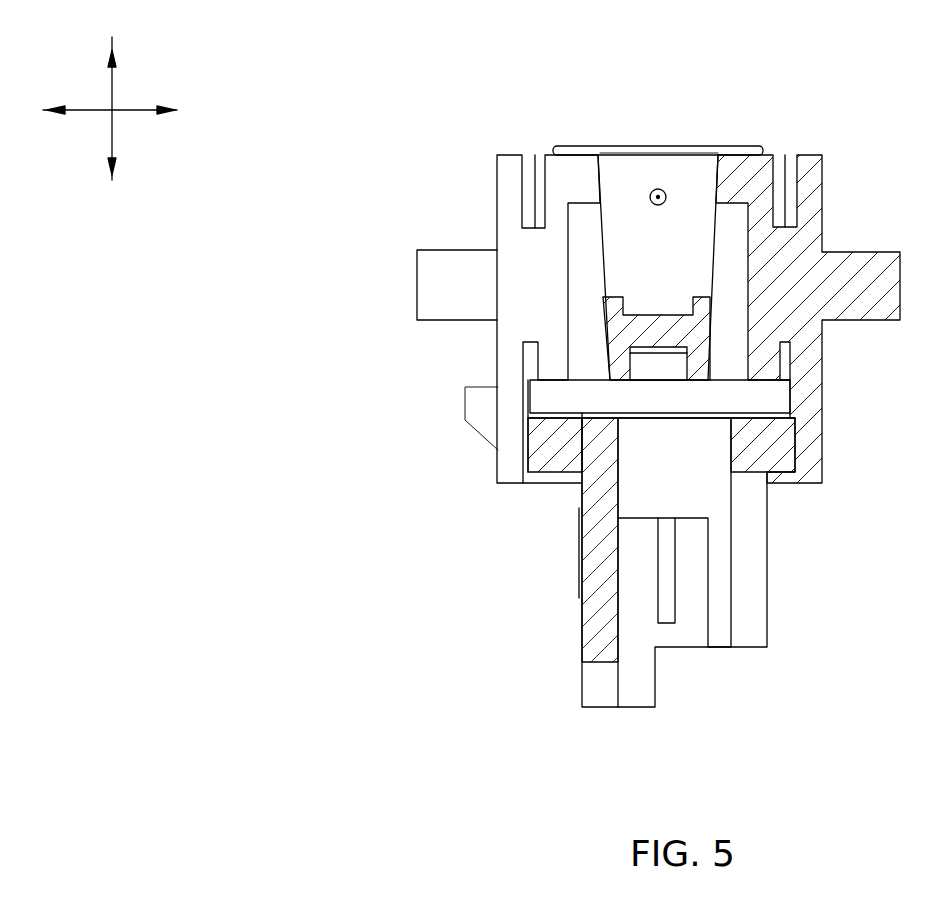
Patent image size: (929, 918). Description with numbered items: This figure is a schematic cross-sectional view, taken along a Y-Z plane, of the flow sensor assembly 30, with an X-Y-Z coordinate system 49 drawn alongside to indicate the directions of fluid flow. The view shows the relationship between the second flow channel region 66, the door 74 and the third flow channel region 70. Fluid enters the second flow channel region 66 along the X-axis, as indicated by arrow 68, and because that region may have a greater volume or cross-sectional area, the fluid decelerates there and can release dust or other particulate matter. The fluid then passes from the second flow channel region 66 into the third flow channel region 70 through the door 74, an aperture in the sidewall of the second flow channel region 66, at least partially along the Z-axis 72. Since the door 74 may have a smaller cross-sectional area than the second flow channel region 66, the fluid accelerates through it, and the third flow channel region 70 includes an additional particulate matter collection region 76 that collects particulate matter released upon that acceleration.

The flow sensor assembly 30 is at (453, 101).
The X-Y-Z coordinate system 49 is at (163, 154).
The second flow channel region 66 is at (683, 160).
The arrow 68 is at (656, 188).
The third flow channel region 70 is at (605, 308).
The Z-axis 72 is at (603, 257).
The door 74 is at (600, 238).
The additional particulate matter collection region 76 is at (600, 377).